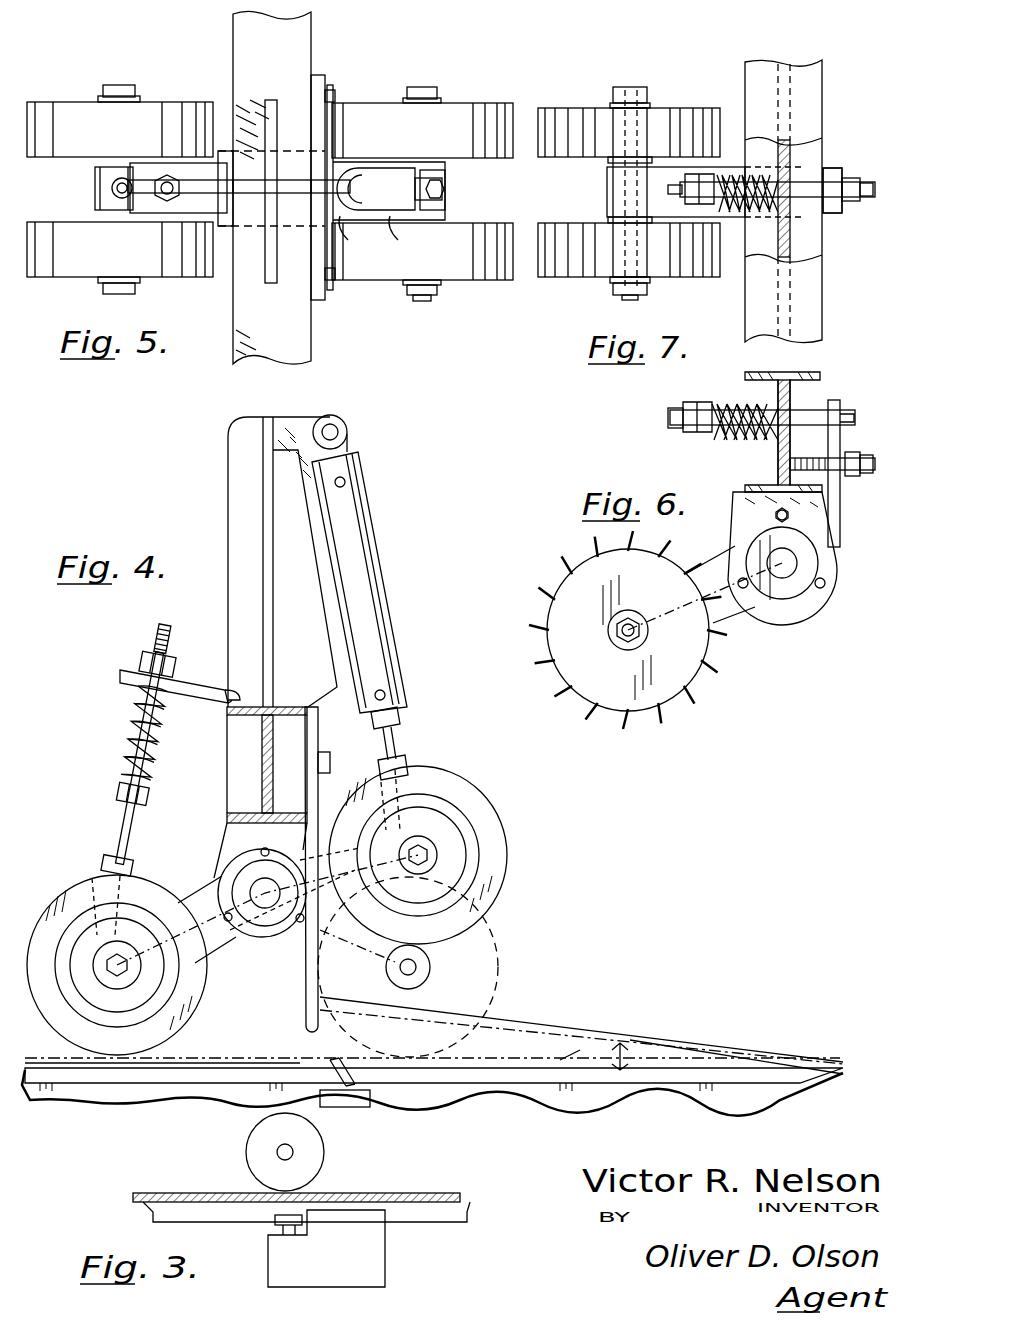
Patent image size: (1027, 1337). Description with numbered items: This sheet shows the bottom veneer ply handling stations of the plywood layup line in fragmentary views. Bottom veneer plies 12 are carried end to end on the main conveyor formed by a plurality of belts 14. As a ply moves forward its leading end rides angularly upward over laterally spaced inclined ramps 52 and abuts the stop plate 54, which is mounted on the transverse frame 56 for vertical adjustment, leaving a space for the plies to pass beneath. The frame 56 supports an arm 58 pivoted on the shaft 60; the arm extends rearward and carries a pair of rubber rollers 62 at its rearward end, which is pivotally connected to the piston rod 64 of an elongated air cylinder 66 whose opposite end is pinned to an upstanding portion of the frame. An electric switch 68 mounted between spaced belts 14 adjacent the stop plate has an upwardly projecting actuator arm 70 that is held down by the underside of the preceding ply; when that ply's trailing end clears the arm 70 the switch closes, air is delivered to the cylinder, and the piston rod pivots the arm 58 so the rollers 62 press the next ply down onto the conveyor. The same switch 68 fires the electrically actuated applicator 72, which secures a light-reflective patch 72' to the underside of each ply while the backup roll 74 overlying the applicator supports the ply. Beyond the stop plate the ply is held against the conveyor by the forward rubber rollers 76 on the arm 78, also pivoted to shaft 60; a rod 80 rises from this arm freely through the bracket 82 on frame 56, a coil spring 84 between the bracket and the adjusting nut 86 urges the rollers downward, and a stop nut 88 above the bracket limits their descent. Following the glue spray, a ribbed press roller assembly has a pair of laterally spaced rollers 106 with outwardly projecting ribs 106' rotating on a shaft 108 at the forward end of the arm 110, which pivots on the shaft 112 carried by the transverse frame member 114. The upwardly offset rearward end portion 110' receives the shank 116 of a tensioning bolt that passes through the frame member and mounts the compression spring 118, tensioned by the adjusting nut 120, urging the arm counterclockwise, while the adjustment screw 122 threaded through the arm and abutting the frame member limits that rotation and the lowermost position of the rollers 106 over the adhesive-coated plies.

In FIG. 4, the bottom veneer plies 12 is at (48, 1064).
In FIG. 3, the bottom veneer plies 12 is at (443, 1195).
In FIG. 4, the belts 14 is at (755, 1076).
In FIG. 3, the belts 14 is at (470, 1205).
In FIG. 4, the inclined ramps 52 is at (594, 1056).
In FIG. 5, the stop plate 54 is at (320, 77).
In FIG. 4, the stop plate 54 is at (305, 1004).
In FIG. 5, the transverse frame 56 is at (238, 65).
In FIG. 4, the transverse frame 56 is at (262, 790).
In FIG. 5, the arm 58 is at (448, 165).
In FIG. 4, the arm 58 is at (325, 910).
In FIG. 4, the shaft 60 is at (262, 905).
In FIG. 5, the rubber rollers 62 is at (483, 228).
In FIG. 4, the rubber rollers 62 is at (468, 785).
In FIG. 4, the piston rod 64 is at (396, 750).
In FIG. 5, the air cylinder 66 is at (390, 178).
In FIG. 4, the air cylinder 66 is at (366, 535).
In FIG. 4, the electric switch 68 is at (368, 1104).
In FIG. 4, the actuator arm 70 is at (343, 1058).
In FIG. 3, the applicator 72 is at (352, 1248).
In FIG. 3, the patch 72' is at (262, 1236).
In FIG. 3, the backup roll 74 is at (318, 1160).
In FIG. 5, the forward rubber rollers 76 is at (62, 227).
In FIG. 4, the forward rubber rollers 76 is at (75, 888).
In FIG. 4, the arm 78 is at (200, 885).
In FIG. 5, the rod 80 is at (180, 190).
In FIG. 4, the rod 80 is at (160, 631).
In FIG. 5, the bracket 82 is at (146, 165).
In FIG. 4, the bracket 82 is at (118, 675).
In FIG. 4, the coil spring 84 is at (130, 720).
In FIG. 4, the adjusting nut 86 is at (118, 792).
In FIG. 5, the stop nut 88 is at (170, 202).
In FIG. 4, the stop nut 88 is at (148, 662).
In FIG. 7, the rollers 106 is at (629, 192).
In FIG. 6, the rollers 106 is at (606, 630).
In FIG. 6, the ribs 106' is at (628, 629).
In FIG. 7, the shaft 108 is at (637, 72).
In FIG. 6, the shaft 108 is at (620, 638).
In FIG. 7, the arm 110 is at (685, 192).
In FIG. 6, the arm 110 is at (732, 561).
In FIG. 7, the rearward end portion 110' is at (853, 171).
In FIG. 6, the rearward end portion 110' is at (862, 466).
In FIG. 6, the shaft 112 is at (778, 575).
In FIG. 7, the transverse frame member 114 is at (818, 116).
In FIG. 6, the transverse frame member 114 is at (778, 472).
In FIG. 7, the shank 116 is at (808, 197).
In FIG. 6, the shank 116 is at (808, 410).
In FIG. 7, the compression spring 118 is at (737, 220).
In FIG. 6, the compression spring 118 is at (735, 440).
In FIG. 6, the adjusting nut 120 is at (690, 433).
In FIG. 6, the adjustment screw 122 is at (852, 470).